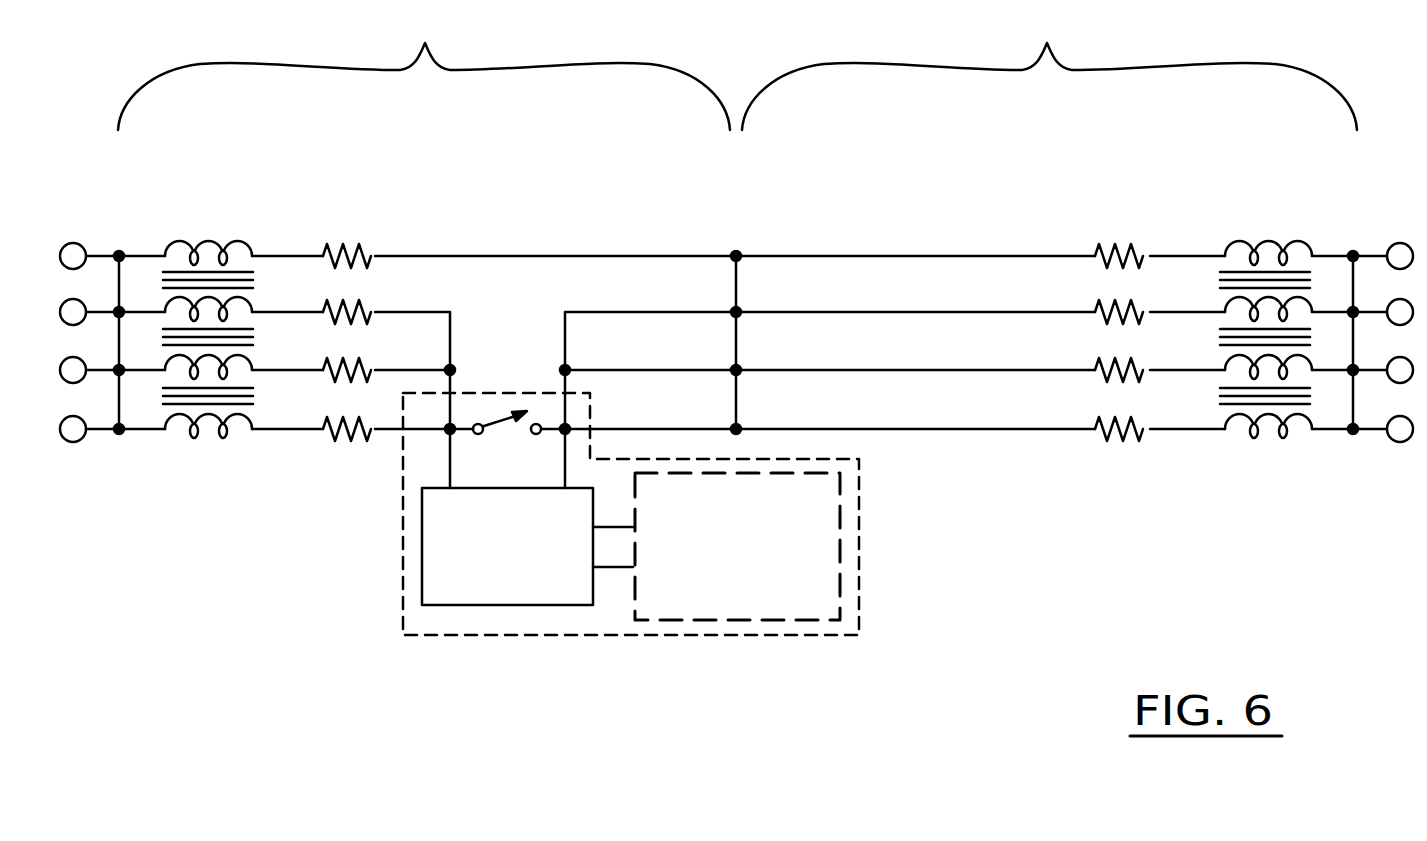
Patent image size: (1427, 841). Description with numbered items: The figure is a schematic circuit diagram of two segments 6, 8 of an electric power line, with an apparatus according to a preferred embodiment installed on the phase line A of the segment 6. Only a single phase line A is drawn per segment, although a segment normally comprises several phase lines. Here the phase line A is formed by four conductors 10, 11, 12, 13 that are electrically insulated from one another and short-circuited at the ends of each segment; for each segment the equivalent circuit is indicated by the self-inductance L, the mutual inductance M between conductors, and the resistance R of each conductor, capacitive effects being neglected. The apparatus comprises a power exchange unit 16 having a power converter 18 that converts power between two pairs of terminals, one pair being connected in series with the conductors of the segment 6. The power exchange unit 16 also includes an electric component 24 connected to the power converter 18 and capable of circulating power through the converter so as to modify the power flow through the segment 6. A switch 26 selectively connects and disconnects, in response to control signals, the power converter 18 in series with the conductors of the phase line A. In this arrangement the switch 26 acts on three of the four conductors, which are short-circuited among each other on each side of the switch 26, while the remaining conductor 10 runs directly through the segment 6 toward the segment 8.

The segment 6 is at (424, 68).
The segment 8 is at (1049, 68).
The conductor 10 is at (650, 256).
The conductor 11 is at (627, 312).
The conductor 12 is at (703, 370).
The conductor 13 is at (618, 429).
The power exchange unit 16 is at (413, 540).
The power converter 18 is at (484, 563).
The electric component 24 is at (716, 550).
The switch 26 is at (493, 418).
The phase line A is at (300, 480).
The self-inductance L is at (738, 322).
The resistance R is at (733, 324).
The mutual inductance M is at (736, 337).